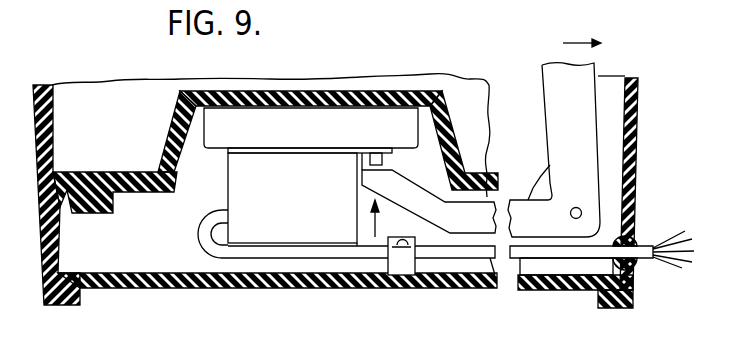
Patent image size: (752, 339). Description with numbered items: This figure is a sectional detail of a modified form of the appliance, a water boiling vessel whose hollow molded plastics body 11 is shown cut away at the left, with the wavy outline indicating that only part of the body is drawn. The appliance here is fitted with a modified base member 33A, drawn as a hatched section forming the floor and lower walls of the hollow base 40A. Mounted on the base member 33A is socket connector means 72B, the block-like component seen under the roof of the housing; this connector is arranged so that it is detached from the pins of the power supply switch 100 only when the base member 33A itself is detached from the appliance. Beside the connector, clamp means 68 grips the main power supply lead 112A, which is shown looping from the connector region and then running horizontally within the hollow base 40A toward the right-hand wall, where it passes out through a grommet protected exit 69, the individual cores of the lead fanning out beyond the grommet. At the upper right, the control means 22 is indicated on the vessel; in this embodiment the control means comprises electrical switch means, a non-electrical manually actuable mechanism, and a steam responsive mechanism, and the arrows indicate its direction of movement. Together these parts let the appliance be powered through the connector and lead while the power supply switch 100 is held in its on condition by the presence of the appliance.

The power supply switch 100 is at (88, 100).
The hollow molded plastics body 11 is at (53, 133).
The hollow base 40A is at (150, 240).
The modified base member 33A is at (127, 288).
The main power supply lead 112A is at (226, 250).
The socket connector means 72B is at (317, 222).
The clamp means 68 is at (402, 260).
The control means 22 is at (548, 105).
The grommet protected exit 69 is at (640, 240).